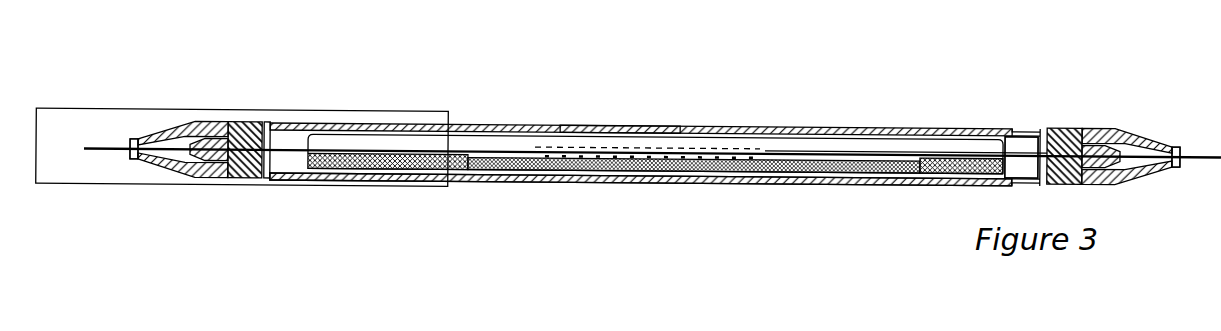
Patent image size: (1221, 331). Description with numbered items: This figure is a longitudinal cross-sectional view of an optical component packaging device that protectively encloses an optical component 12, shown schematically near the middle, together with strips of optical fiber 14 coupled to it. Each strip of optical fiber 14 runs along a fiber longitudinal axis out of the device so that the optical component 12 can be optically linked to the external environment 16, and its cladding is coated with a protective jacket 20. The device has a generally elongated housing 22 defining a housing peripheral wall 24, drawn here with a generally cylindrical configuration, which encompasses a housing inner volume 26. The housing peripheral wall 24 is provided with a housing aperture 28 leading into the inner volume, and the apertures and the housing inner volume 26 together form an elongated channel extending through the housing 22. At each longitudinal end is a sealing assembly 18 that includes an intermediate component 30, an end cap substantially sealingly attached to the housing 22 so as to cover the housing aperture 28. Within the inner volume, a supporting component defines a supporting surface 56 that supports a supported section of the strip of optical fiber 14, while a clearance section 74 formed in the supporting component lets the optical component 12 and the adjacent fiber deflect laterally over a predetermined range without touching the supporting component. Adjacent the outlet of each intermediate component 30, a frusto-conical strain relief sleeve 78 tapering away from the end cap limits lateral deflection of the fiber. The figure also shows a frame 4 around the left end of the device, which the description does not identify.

The housing frame 4 is at (370, 185).
The optical component 12 is at (655, 142).
The strip of optical fiber 14 is at (463, 150).
The external environment 16 is at (858, 40).
The sealing assembly 18 is at (214, 108).
The protective jacket 20 is at (107, 142).
The housing 22 is at (616, 88).
The housing peripheral wall 24 is at (609, 181).
The housing inner volume 26 is at (808, 141).
The housing aperture 28 is at (273, 167).
The intermediate component 30 is at (257, 127).
The supporting surface 56 is at (350, 157).
The clearance section 74 is at (841, 157).
The strain relief sleeve 78 is at (180, 172).